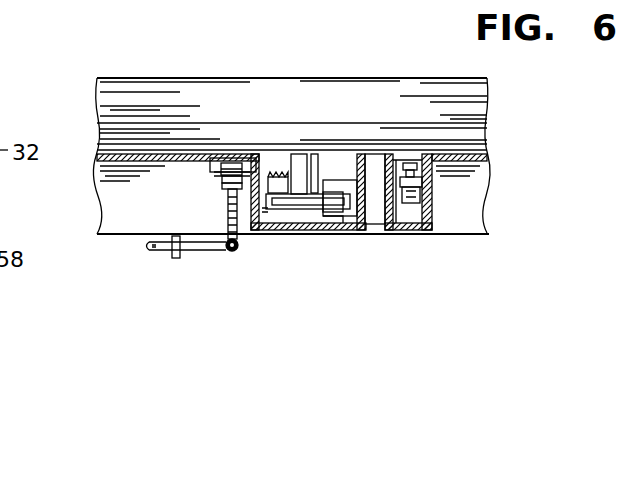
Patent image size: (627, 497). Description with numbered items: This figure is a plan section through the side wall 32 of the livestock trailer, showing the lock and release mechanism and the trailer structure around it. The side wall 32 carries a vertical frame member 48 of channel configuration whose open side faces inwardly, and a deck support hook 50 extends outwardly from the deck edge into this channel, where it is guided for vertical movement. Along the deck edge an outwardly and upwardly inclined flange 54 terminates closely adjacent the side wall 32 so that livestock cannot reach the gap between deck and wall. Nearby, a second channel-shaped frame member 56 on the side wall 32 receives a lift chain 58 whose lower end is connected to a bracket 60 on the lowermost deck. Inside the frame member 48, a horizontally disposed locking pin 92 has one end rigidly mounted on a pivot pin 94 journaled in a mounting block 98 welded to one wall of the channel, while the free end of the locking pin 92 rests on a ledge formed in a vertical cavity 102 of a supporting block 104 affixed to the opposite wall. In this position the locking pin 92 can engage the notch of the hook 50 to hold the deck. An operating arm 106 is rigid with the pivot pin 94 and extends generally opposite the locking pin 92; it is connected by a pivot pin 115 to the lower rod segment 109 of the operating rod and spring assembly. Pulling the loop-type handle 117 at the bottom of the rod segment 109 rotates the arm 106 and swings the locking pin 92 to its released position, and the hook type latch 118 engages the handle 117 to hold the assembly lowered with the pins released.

The side wall 32 is at (112, 158).
The vertical frame member 48 is at (349, 225).
The support hook 50 is at (337, 183).
The inclined flange 54 is at (419, 130).
The channel-shaped frame member 56 is at (432, 213).
The lift chain 58 is at (425, 184).
The bracket 60 is at (398, 198).
The locking pin 92 is at (332, 201).
The pivot pin 94 is at (275, 212).
The mounting block 98 is at (289, 176).
The vertical cavity 102 is at (336, 222).
The supporting block 104 is at (353, 153).
The operating arm 106 is at (218, 158).
The lower rod segment 109 is at (235, 252).
The pivot pin 115 is at (230, 226).
The loop-type handle 117 is at (146, 243).
The hook type latch 118 is at (180, 257).